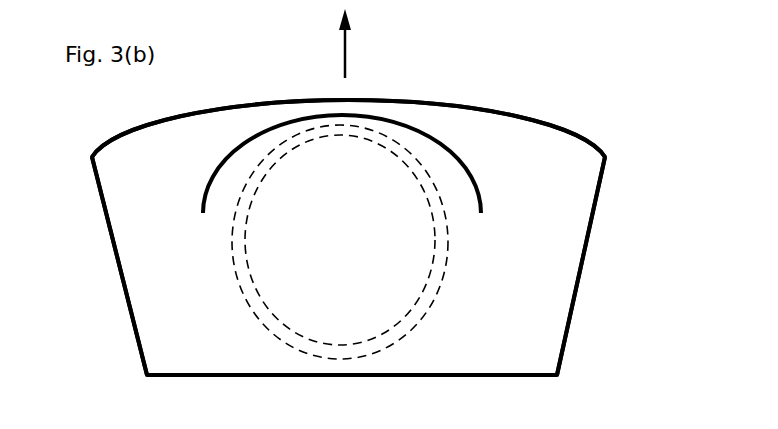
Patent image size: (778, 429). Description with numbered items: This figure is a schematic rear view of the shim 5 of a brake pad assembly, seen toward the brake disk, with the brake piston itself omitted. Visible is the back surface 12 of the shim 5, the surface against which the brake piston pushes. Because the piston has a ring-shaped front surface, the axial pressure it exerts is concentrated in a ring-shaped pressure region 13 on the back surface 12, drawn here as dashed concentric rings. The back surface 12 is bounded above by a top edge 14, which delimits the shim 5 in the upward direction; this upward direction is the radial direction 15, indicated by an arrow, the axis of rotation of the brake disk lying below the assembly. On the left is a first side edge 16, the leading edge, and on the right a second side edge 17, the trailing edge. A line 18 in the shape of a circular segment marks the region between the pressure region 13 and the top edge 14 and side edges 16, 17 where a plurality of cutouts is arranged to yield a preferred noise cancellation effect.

The shim 5 is at (394, 240).
The back surface 12 is at (553, 295).
The pressure region 13 is at (293, 143).
The top edge 14 is at (388, 99).
The radial direction 15 is at (345, 62).
The first side edge 16 is at (110, 227).
The second side edge 17 is at (590, 232).
The line 18 is at (245, 142).